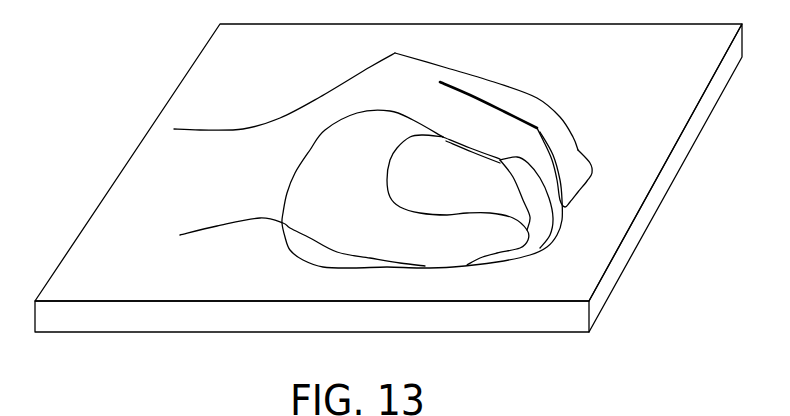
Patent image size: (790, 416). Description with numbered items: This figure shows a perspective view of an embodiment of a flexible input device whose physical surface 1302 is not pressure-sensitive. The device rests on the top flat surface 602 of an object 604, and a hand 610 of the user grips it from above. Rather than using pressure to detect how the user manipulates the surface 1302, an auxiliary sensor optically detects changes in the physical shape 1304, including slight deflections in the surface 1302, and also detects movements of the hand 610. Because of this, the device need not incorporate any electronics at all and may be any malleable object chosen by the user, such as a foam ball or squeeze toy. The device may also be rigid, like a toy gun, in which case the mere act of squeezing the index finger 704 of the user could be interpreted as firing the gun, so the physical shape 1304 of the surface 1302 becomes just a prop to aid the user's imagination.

The top flat surface 602 is at (585, 35).
The object 604 is at (300, 332).
The hand 610 is at (418, 90).
The index finger 704 is at (540, 130).
The physical surface 1302 is at (465, 188).
The physical shape 1304 is at (290, 248).